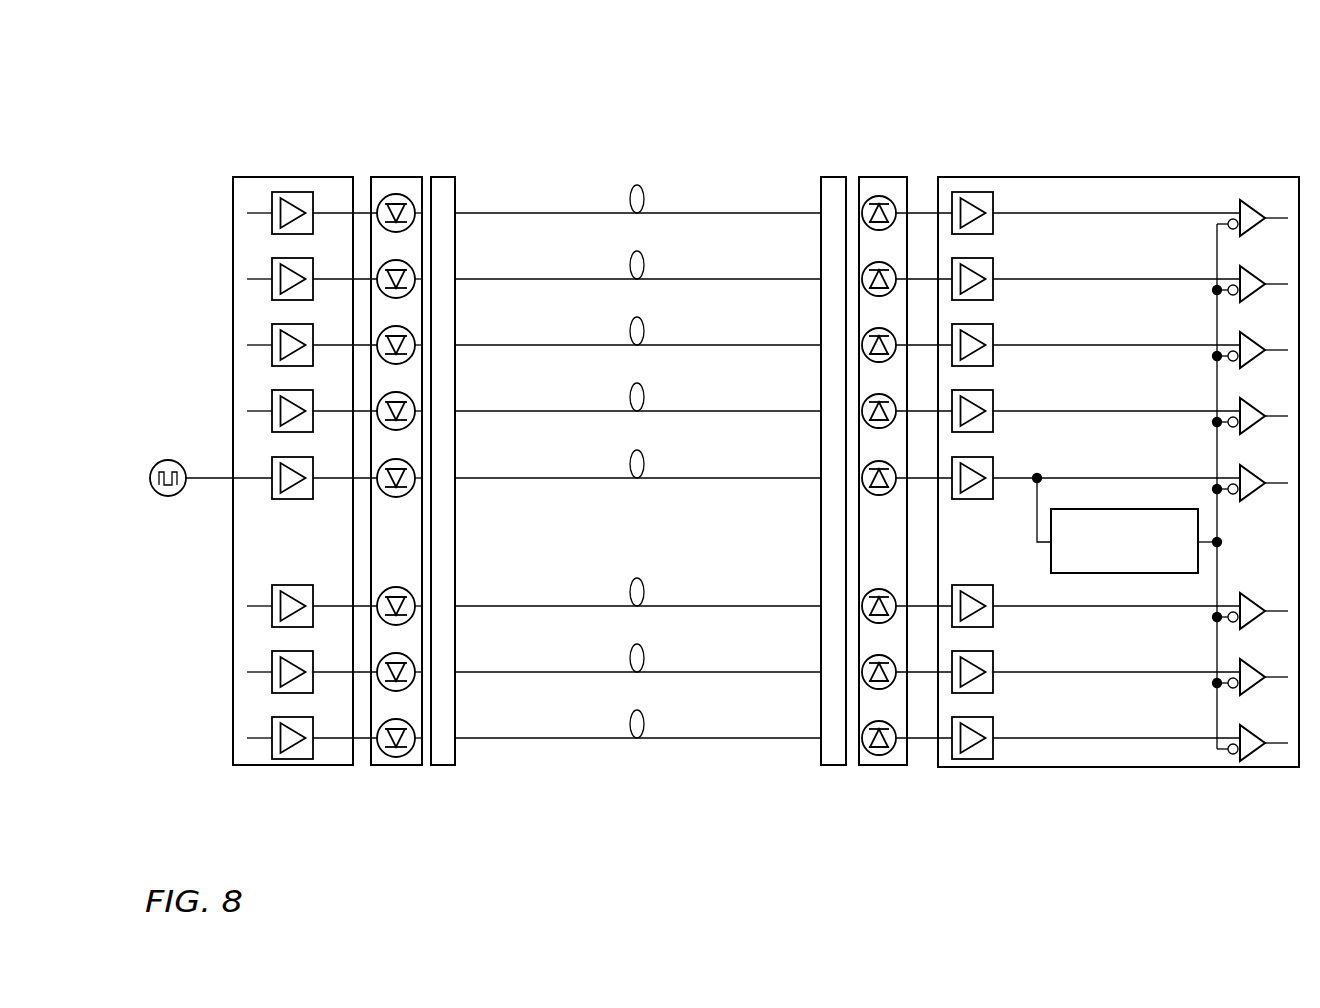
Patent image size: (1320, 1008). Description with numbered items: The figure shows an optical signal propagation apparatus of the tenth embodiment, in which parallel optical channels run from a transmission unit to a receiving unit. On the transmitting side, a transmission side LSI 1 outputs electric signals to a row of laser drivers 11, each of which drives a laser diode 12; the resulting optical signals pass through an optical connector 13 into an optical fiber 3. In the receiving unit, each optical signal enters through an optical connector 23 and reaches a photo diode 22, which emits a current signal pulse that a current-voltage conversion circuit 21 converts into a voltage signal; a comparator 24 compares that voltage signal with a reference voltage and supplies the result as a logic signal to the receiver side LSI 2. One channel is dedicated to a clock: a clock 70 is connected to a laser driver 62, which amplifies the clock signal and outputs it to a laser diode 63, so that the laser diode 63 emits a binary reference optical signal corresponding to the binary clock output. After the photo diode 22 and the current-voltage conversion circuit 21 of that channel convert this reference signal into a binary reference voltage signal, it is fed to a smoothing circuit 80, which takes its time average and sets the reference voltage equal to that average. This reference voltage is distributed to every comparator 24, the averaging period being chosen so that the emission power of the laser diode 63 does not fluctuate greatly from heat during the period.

The transmission side LSI 1 is at (321, 177).
The receiver side LSI 2 is at (1200, 177).
The optical fiber 3 is at (543, 213).
The laser driver 11 is at (300, 759).
The laser diode 12 is at (397, 765).
The optical connector 13 is at (462, 138).
The current-voltage conversion circuit 21 is at (975, 762).
The photo diode 22 is at (877, 765).
The optical connector 23 is at (851, 137).
The comparator 24 is at (1273, 775).
The laser driver 62 is at (272, 465).
The laser diode 63 is at (417, 490).
The clock 70 is at (165, 496).
The smoothing circuit 80 is at (1078, 573).